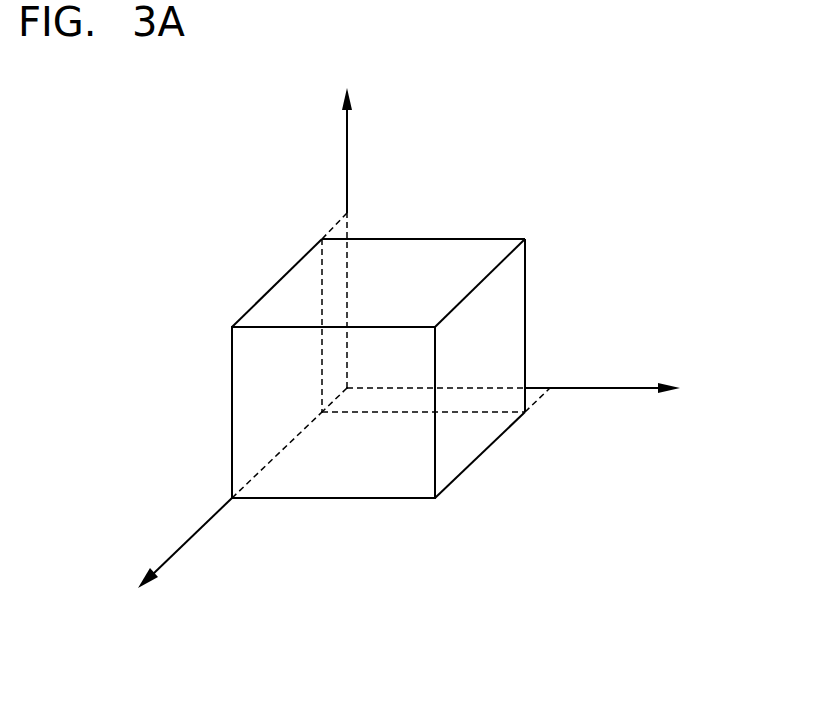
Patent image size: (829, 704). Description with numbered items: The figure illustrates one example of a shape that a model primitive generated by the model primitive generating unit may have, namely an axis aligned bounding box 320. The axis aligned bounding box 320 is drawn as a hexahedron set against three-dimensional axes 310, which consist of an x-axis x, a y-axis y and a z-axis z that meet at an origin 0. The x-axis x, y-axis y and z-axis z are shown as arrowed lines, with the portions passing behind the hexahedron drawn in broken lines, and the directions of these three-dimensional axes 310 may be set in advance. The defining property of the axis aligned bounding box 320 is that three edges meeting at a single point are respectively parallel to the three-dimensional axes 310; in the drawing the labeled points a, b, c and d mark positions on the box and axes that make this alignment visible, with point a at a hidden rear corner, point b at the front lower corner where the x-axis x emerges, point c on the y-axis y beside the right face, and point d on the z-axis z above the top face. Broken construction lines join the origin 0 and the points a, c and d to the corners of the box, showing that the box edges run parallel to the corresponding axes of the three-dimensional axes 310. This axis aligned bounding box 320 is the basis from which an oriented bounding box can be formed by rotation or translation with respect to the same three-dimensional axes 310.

The three-dimensional axes 310 is at (411, 337).
The axis aligned bounding box 320 is at (425, 238).
The x axis x is at (232, 502).
The y axis y is at (526, 386).
The z axis z is at (346, 223).
The origin 0 is at (357, 372).
The point a is at (311, 400).
The point b is at (221, 490).
The point c is at (541, 386).
The point d is at (345, 218).